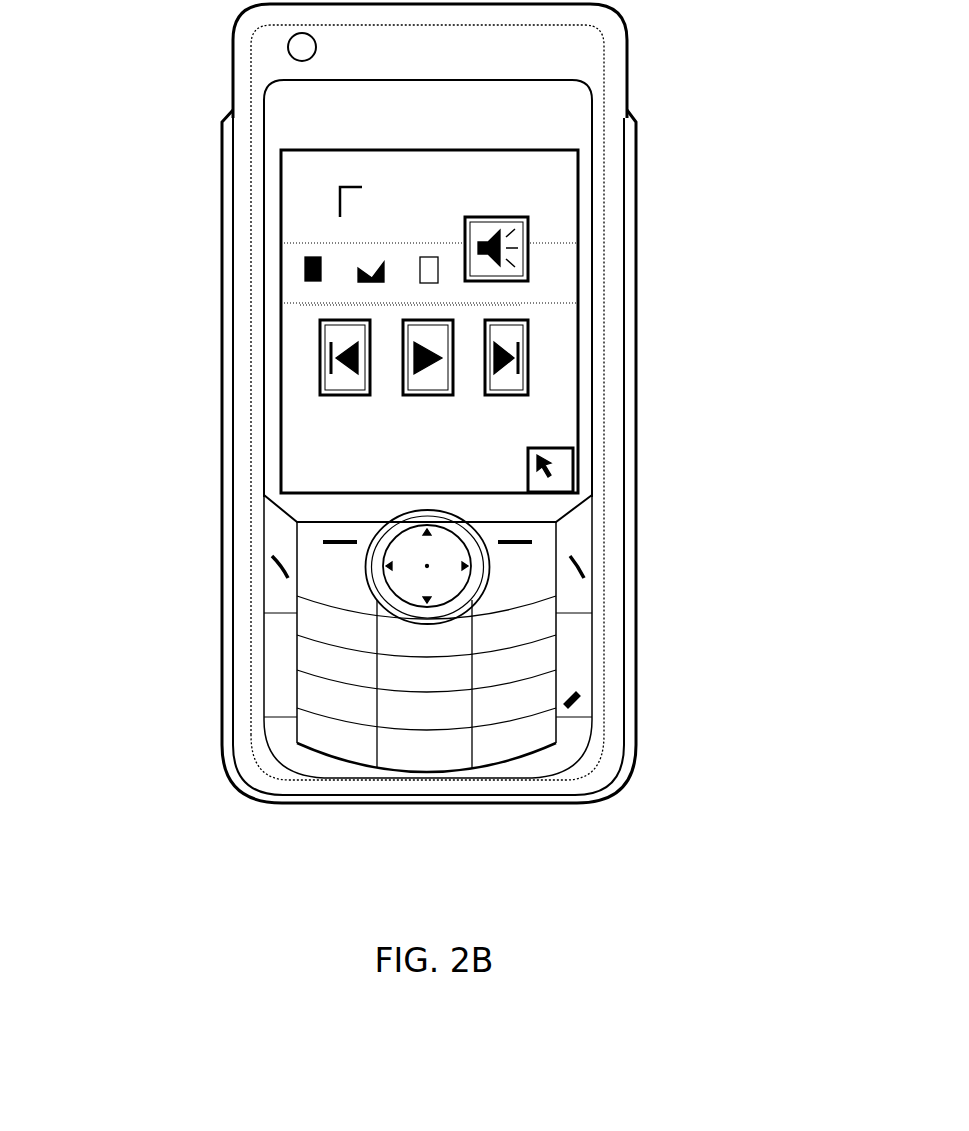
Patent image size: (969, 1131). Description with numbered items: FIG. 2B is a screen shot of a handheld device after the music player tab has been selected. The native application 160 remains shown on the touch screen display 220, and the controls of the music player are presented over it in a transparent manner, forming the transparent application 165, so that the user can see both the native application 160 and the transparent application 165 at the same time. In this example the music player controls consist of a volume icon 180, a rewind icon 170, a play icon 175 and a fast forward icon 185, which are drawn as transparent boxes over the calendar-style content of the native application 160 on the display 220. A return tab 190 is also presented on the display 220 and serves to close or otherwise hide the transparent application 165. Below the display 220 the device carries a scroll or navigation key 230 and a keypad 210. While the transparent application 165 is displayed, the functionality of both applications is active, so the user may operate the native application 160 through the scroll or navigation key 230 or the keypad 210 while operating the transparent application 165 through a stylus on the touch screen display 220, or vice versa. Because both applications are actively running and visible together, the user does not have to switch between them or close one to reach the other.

The native application 160 is at (310, 192).
The transparent application 165 is at (317, 300).
The rewind icon 170 is at (320, 335).
The play icon 175 is at (433, 380).
The volume icon 180 is at (505, 228).
The fast forward icon 185 is at (512, 335).
The return tab 190 is at (557, 465).
The keypad 210 is at (513, 742).
The display 220 is at (542, 180).
The scroll or navigation key 230 is at (438, 552).